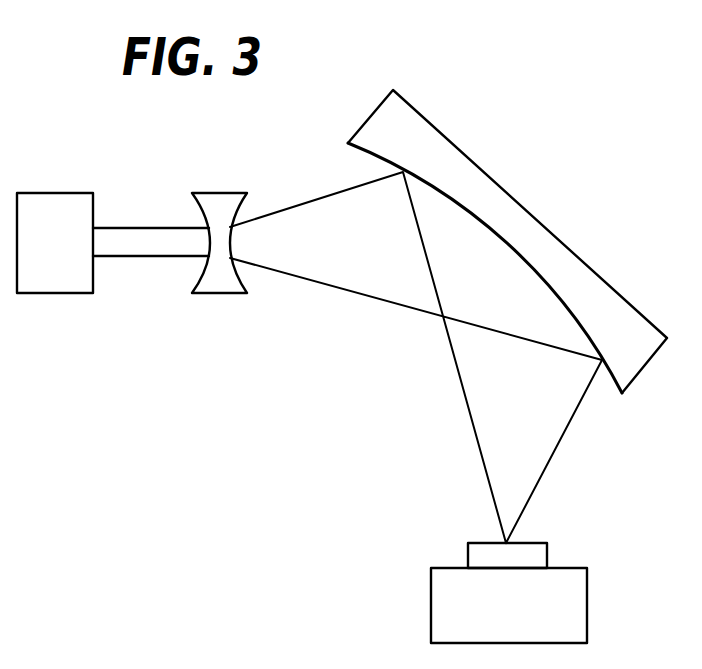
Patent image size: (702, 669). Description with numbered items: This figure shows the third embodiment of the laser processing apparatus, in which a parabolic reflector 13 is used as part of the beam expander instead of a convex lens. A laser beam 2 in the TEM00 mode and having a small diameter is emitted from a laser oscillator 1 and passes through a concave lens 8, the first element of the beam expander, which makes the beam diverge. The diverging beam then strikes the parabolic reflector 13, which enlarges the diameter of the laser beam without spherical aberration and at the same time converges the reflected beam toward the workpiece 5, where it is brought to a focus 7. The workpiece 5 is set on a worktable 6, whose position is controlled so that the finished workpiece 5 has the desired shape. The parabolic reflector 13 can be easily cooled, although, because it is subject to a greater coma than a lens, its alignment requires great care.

The laser oscillator 1 is at (80, 193).
The laser beam 2 is at (140, 228).
The concave lens 8 is at (220, 192).
The parabolic reflector 13 is at (505, 190).
The workpiece 5 is at (545, 543).
The worktable 6 is at (587, 603).
The focus 7 is at (502, 543).